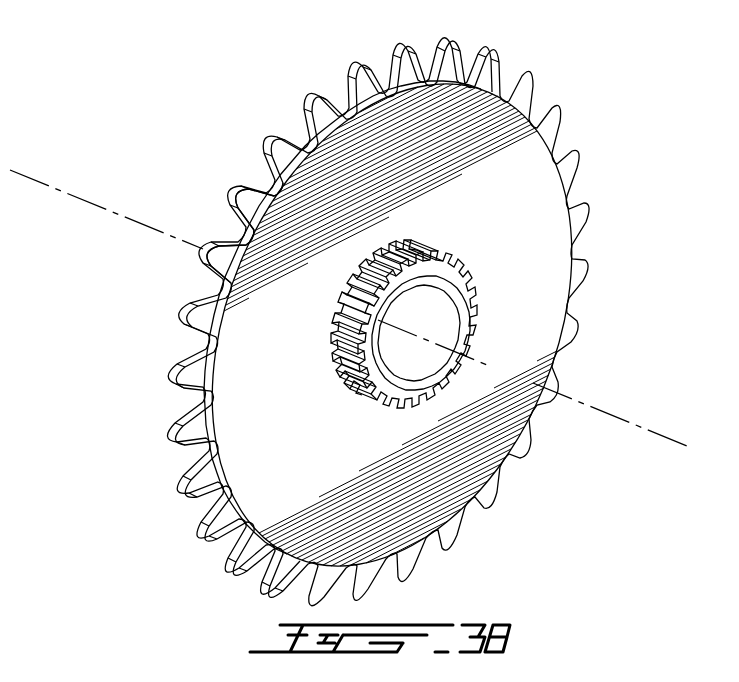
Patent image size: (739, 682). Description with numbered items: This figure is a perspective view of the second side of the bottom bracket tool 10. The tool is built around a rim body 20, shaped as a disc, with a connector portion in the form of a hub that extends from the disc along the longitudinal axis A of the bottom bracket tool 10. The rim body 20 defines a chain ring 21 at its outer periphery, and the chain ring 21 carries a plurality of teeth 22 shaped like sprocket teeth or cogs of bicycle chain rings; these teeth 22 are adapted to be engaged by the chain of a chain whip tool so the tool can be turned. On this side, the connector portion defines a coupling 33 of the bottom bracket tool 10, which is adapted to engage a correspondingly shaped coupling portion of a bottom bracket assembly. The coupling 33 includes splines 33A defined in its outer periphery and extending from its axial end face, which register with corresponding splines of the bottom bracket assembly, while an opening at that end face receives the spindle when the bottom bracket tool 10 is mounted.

The bottom bracket tool 10 is at (588, 62).
The rim body 20 is at (250, 382).
The chain ring 21 is at (168, 332).
The teeth 22 is at (240, 190).
The coupling 33 is at (494, 314).
The splines 33A is at (438, 247).
The longitudinal axis A is at (38, 181).